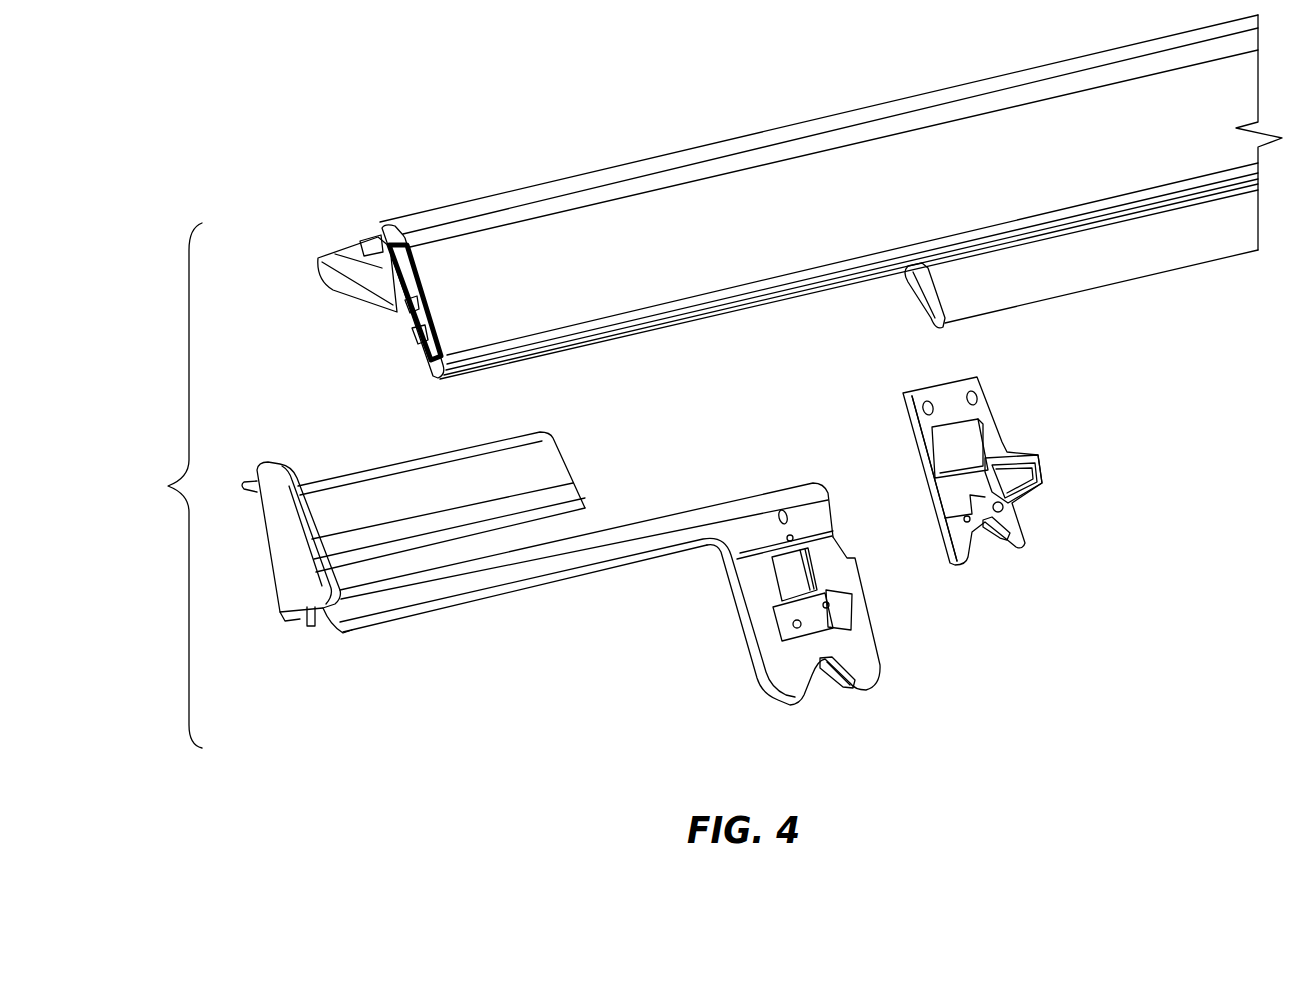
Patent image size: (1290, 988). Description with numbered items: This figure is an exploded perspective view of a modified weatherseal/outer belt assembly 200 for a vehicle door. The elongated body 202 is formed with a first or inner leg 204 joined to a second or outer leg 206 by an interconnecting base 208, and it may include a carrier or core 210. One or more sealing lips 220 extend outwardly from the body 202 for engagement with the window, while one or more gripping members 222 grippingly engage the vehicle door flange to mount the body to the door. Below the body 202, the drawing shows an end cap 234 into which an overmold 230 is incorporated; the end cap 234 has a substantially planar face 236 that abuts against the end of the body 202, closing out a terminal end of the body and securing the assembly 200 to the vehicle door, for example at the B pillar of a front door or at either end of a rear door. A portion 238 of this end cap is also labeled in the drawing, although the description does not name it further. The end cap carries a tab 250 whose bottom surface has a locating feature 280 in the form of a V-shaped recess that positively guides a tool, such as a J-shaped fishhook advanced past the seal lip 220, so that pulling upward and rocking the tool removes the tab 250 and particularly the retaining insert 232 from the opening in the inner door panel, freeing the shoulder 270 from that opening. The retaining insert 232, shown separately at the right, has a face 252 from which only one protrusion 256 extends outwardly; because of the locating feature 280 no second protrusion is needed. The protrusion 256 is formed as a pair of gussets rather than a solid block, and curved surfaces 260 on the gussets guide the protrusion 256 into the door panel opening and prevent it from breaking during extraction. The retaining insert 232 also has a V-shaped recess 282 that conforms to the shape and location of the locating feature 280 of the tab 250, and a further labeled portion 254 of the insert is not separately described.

The weatherseal/outer belt assembly 200 is at (162, 485).
The body 202 is at (773, 223).
The inner leg 204 is at (388, 318).
The outer leg 206 is at (500, 306).
The interconnecting base 208 is at (412, 216).
The carrier or core 210 is at (379, 225).
The sealing lip 220 is at (350, 289).
The gripping members 222 is at (397, 333).
The overmold 230 is at (610, 612).
The retaining insert 232 is at (992, 496).
The end cap 234 is at (392, 567).
The planar face 236 is at (286, 548).
The body 238 is at (551, 568).
The tab 250 is at (771, 631).
The face 252 is at (968, 410).
The flange 254 is at (910, 450).
The protrusion 256 is at (1040, 480).
The curved surfaces 260 is at (1040, 494).
The shoulder 270 is at (1008, 458).
The locating feature 280 is at (828, 684).
The V-shaped recess 282 is at (995, 540).